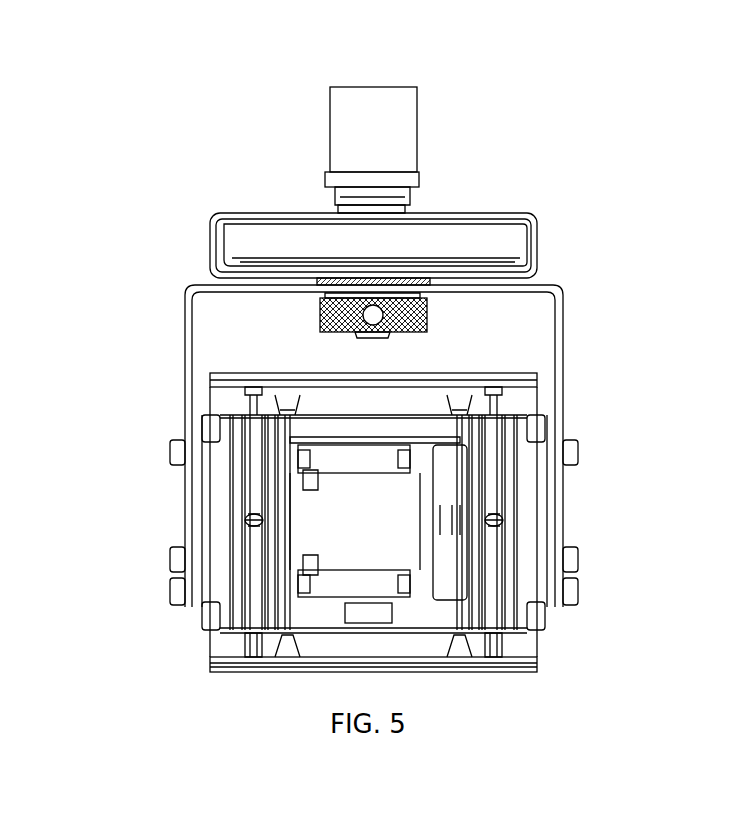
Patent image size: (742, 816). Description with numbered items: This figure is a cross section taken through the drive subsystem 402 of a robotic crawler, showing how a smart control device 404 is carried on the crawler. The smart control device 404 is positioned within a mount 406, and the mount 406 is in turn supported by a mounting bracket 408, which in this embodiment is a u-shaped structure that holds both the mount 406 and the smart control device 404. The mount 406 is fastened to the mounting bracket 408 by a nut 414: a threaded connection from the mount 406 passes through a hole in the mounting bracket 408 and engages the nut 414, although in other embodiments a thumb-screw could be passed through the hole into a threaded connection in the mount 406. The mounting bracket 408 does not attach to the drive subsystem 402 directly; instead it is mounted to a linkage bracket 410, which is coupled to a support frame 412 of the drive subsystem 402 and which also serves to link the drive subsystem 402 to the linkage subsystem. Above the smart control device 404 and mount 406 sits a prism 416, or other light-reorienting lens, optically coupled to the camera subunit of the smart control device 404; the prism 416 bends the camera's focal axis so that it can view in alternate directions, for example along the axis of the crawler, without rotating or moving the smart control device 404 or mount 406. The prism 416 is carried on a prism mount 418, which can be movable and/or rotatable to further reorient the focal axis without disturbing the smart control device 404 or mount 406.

The drive subsystem 402 is at (240, 672).
The smart control device 404 is at (277, 240).
The mount 406 is at (537, 243).
The mounting bracket 408 is at (563, 343).
The linkage bracket 410 is at (197, 492).
The support frame 412 is at (210, 540).
The nut 414 is at (322, 310).
The prism 416 is at (395, 105).
The prism mount 418 is at (420, 185).